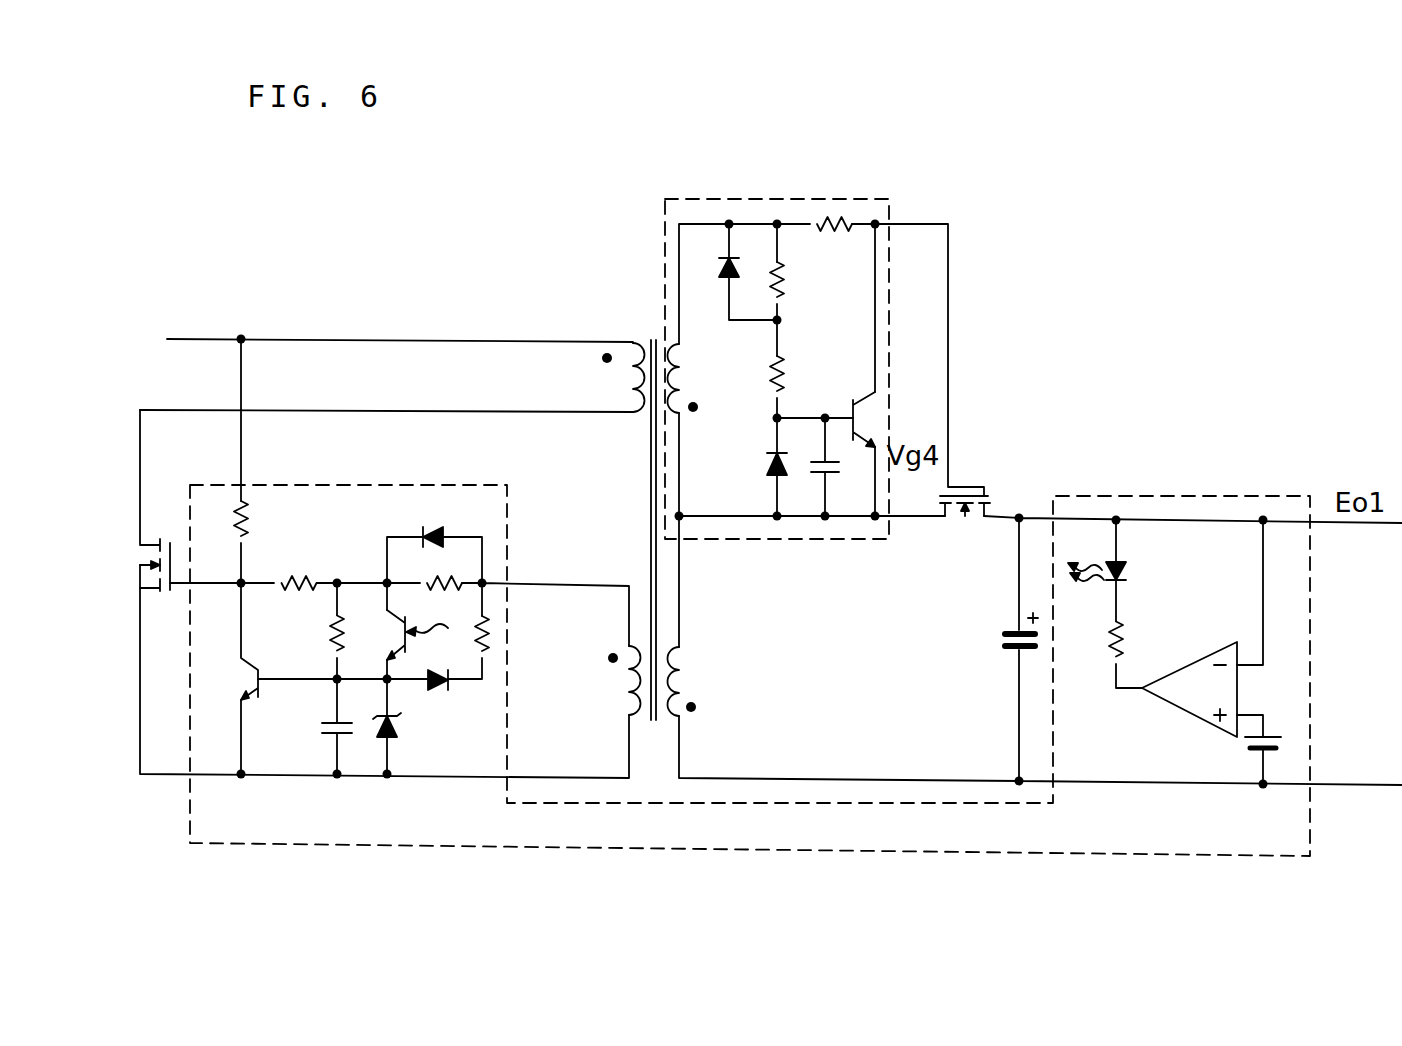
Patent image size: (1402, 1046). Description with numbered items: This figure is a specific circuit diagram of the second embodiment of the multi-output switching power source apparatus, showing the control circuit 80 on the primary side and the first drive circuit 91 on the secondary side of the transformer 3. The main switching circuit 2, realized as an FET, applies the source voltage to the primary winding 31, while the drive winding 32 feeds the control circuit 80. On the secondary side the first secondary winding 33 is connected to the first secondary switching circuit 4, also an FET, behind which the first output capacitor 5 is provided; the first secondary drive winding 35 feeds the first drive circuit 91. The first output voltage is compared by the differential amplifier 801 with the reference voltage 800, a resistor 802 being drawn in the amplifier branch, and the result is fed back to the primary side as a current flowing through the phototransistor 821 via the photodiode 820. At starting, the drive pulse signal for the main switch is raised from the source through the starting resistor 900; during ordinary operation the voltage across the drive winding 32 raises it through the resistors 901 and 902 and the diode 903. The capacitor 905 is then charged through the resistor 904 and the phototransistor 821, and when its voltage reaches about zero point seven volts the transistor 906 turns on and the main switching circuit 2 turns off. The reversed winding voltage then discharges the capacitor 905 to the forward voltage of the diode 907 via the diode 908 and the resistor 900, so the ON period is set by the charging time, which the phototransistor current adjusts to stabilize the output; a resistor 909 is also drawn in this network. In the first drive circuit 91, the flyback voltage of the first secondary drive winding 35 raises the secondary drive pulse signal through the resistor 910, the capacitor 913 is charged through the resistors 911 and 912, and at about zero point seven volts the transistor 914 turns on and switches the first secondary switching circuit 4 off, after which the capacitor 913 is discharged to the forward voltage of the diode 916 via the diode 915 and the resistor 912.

The main switching circuit 2 is at (135, 553).
The transformer 3 is at (655, 340).
The first secondary switching circuit 4 is at (970, 520).
The first output capacitor 5 is at (1003, 637).
The primary winding 31 is at (630, 380).
The drive winding 32 is at (626, 705).
The first secondary winding 33 is at (683, 680).
The first secondary drive winding 35 is at (688, 380).
The control circuit 80 is at (215, 485).
The first drive circuit 91 is at (664, 248).
The reference voltage 800 is at (1248, 748).
The differential amplifier 801 is at (1165, 705).
The resistor 802 is at (1125, 640).
The photodiode 820 is at (1126, 570).
The phototransistor 821 is at (412, 642).
The starting resistor 900 is at (243, 520).
The resistor 901 is at (293, 583).
The resistor 902 is at (445, 575).
The diode 903 is at (445, 536).
The resistor 904 is at (330, 640).
The capacitor 905 is at (320, 730).
The transistor 906 is at (243, 680).
The diode 907 is at (385, 742).
The diode 908 is at (440, 690).
The resistor 909 is at (488, 637).
The resistor 910 is at (830, 224).
The resistor 911 is at (777, 262).
The resistor 912 is at (785, 377).
The capacitor 913 is at (830, 478).
The transistor 914 is at (860, 418).
The diode 915 is at (725, 255).
The diode 916 is at (782, 470).